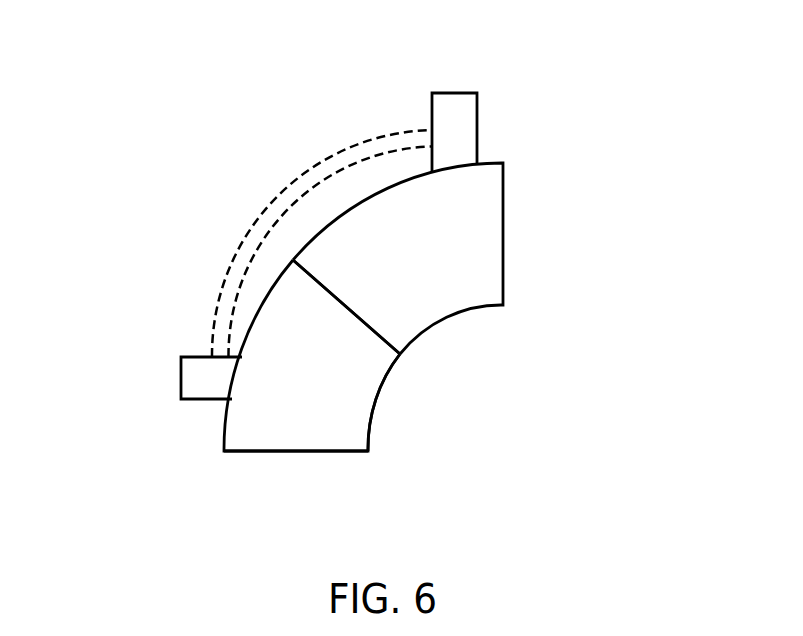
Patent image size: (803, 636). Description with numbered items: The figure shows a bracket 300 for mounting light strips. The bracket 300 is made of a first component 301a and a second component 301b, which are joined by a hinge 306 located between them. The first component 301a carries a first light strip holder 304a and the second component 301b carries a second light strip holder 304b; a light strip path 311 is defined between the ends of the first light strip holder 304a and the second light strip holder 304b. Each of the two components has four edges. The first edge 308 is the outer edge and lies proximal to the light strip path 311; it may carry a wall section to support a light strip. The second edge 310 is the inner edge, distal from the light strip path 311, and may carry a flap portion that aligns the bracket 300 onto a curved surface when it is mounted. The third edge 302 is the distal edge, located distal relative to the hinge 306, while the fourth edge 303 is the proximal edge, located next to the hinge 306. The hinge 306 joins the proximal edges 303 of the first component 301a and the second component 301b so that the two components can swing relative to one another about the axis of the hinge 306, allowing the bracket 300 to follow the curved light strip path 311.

The bracket 300 is at (205, 114).
The first component 301a is at (408, 454).
The second component 301b is at (566, 247).
The third edge 302 is at (272, 452).
The fourth edge 303 is at (370, 294).
The first light strip holder 304a is at (181, 380).
The second light strip holder 304b is at (452, 92).
The hinge 306 is at (312, 272).
The first edge 308 is at (282, 275).
The second edge 310 is at (388, 380).
The light strip path 311 is at (220, 297).